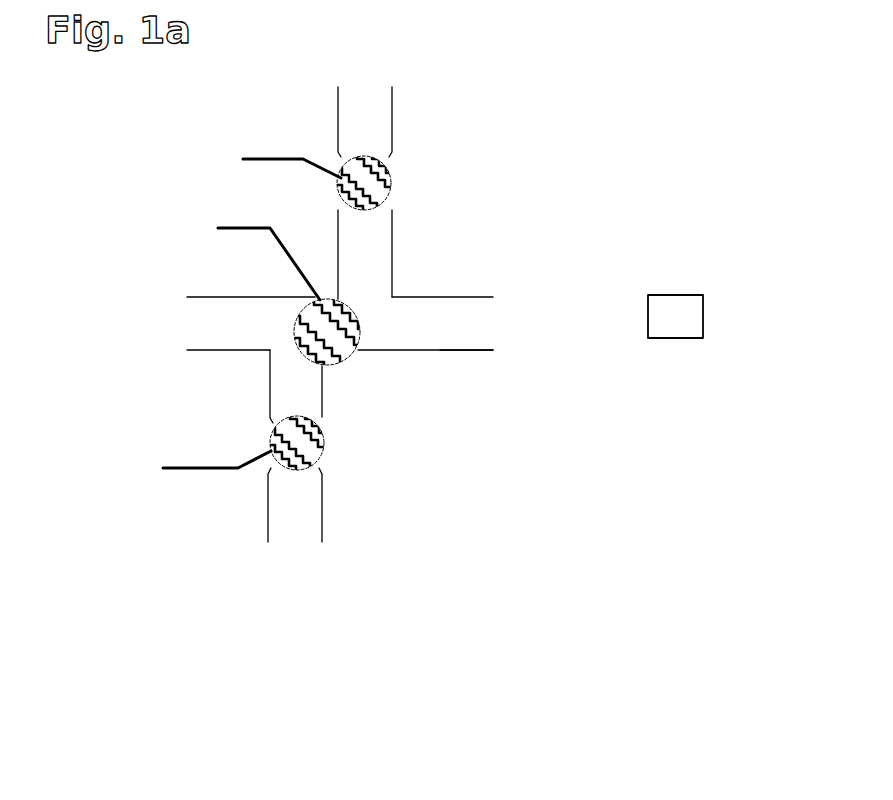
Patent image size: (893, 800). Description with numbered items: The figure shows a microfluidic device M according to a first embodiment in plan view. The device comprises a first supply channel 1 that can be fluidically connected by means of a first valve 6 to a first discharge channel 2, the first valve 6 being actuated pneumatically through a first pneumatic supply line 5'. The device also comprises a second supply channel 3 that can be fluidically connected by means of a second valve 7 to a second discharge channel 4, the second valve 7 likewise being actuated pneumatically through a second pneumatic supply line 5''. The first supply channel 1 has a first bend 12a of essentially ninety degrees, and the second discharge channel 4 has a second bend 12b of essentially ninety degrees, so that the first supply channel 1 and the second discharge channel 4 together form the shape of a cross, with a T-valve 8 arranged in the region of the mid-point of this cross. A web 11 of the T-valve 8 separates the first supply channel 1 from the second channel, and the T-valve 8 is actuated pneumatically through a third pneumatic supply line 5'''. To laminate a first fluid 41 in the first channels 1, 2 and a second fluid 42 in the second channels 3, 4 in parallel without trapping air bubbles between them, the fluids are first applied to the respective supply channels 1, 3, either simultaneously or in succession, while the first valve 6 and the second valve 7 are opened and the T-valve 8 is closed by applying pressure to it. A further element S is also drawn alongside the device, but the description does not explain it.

The first supply channel 1 is at (191, 337).
The first discharge channel 2 is at (292, 518).
The second supply channel 3 is at (362, 104).
The second discharge channel 4 is at (482, 322).
The first pneumatic supply line 5' is at (217, 500).
The second pneumatic supply line 5'' is at (292, 130).
The third pneumatic supply line 5''' is at (220, 185).
The first valve 6 is at (330, 458).
The second valve 7 is at (402, 178).
The T-valve 8 is at (357, 368).
The web 11 is at (306, 327).
The first bend 12a is at (321, 303).
The second bend 12b is at (358, 313).
The first fluid 41 is at (218, 332).
The second fluid 42 is at (442, 332).
The microfluidic device M is at (702, 133).
The sensor S is at (690, 317).